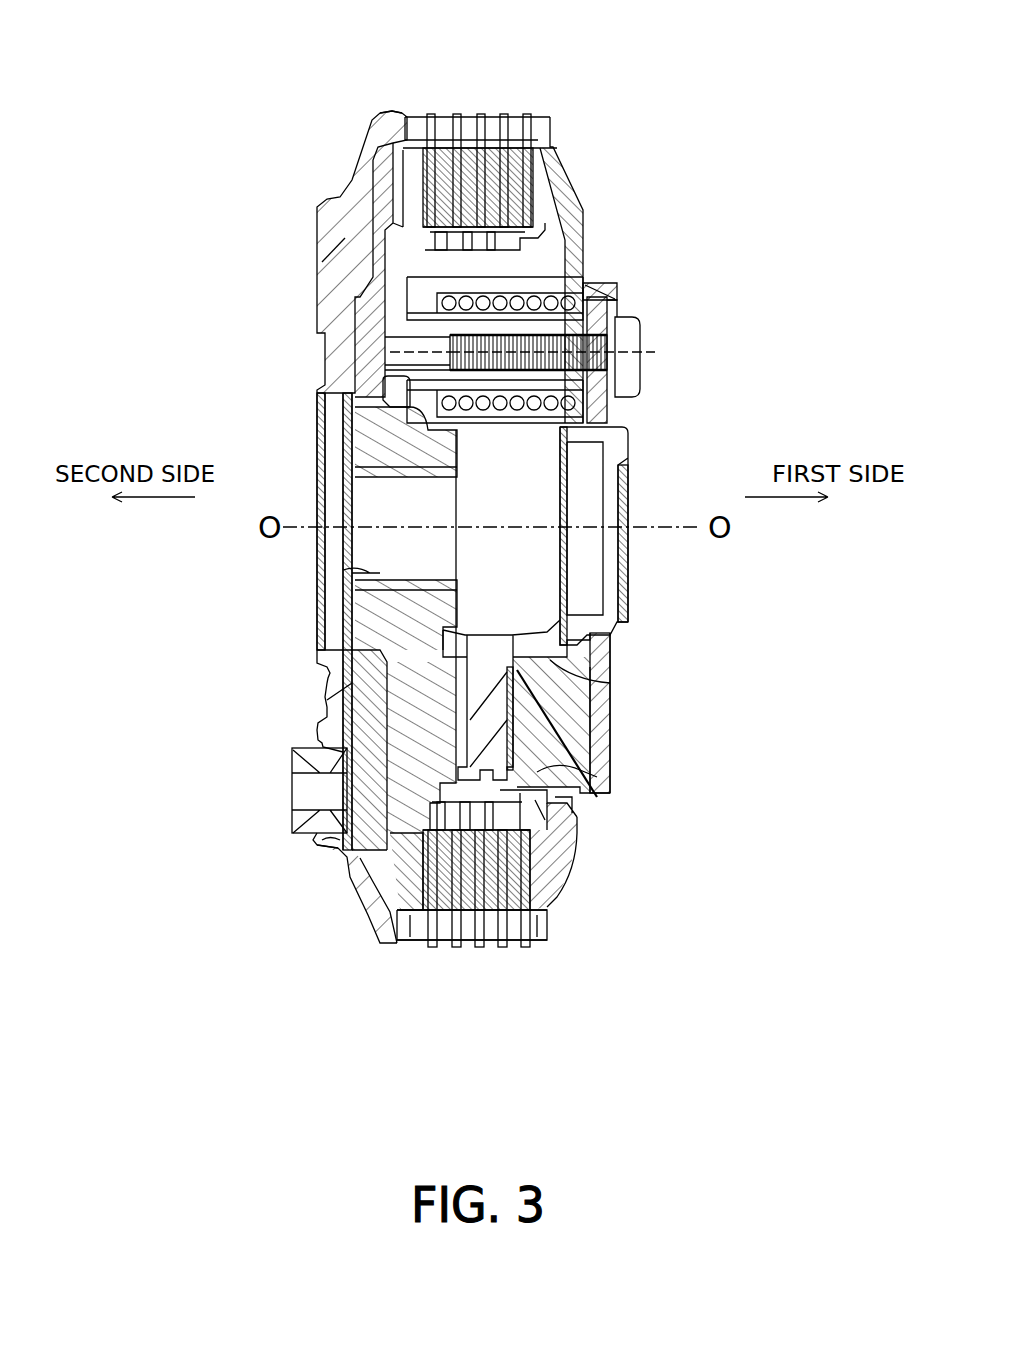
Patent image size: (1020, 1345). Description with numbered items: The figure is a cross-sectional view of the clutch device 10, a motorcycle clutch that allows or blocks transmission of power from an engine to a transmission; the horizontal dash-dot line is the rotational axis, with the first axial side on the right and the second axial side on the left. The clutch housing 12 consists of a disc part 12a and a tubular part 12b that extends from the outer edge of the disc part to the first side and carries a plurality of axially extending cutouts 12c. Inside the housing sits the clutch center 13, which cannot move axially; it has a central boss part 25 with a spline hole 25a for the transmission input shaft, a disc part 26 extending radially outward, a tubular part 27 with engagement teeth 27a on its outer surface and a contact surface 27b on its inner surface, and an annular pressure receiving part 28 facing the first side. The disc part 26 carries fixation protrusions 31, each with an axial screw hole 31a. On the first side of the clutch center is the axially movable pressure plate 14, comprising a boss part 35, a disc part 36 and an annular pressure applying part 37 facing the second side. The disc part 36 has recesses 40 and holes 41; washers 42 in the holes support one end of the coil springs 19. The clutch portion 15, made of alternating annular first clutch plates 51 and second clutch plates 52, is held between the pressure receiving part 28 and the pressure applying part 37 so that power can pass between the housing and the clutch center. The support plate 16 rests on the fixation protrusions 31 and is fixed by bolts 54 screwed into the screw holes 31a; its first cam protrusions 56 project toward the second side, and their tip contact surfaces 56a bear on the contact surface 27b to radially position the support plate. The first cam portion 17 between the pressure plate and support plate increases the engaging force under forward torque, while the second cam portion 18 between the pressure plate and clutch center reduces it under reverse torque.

The clutch device 10 is at (597, 90).
The clutch housing 12 is at (303, 208).
The disc part 12a is at (337, 254).
The tubular part 12b is at (387, 110).
The cutouts 12c is at (420, 115).
The clutch center 13 is at (372, 298).
The pressure plate 14 is at (592, 212).
The clutch portion 15 is at (466, 962).
The support plate 16 is at (618, 291).
The first cam portion 17 is at (613, 703).
The second cam portion 18 is at (450, 708).
The coil springs 19 is at (612, 404).
The boss part 25 is at (352, 440).
The spline hole 25a is at (352, 574).
The disc part 26 is at (380, 742).
The tubular part 27 is at (548, 912).
The teeth 27a is at (322, 852).
The contact surface 27b is at (580, 777).
The pressure receiving part 28 is at (408, 872).
The fixation protrusions 31 is at (620, 304).
The screw hole 31a is at (626, 368).
The boss part 35 is at (617, 447).
The disc part 36 is at (572, 724).
The pressure applying part 37 is at (570, 880).
The recesses 40 is at (612, 663).
The holes 41 is at (346, 385).
The washers 42 is at (380, 338).
The first clutch plate 51 is at (433, 946).
The second clutch plate 52 is at (493, 946).
The bolts 54 is at (642, 342).
The first cam protrusions 56 is at (578, 741).
The contact surface 56a is at (567, 816).